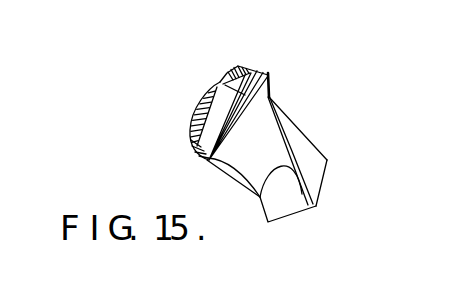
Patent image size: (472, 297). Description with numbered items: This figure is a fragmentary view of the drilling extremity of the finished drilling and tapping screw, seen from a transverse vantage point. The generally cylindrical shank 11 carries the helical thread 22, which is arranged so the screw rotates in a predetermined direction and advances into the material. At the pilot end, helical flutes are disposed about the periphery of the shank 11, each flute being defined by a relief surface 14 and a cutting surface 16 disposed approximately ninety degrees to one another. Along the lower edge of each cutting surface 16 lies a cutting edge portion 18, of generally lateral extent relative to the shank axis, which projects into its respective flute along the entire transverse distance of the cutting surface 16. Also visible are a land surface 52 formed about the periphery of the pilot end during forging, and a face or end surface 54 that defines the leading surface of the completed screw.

The shank 11 is at (220, 82).
The thread 22 is at (266, 76).
The land surface 52 is at (262, 133).
The cutting surface 16 is at (312, 150).
The cutting edge portion 18 is at (327, 160).
The relief surface 14 is at (233, 178).
The face or end surface 54 is at (282, 208).